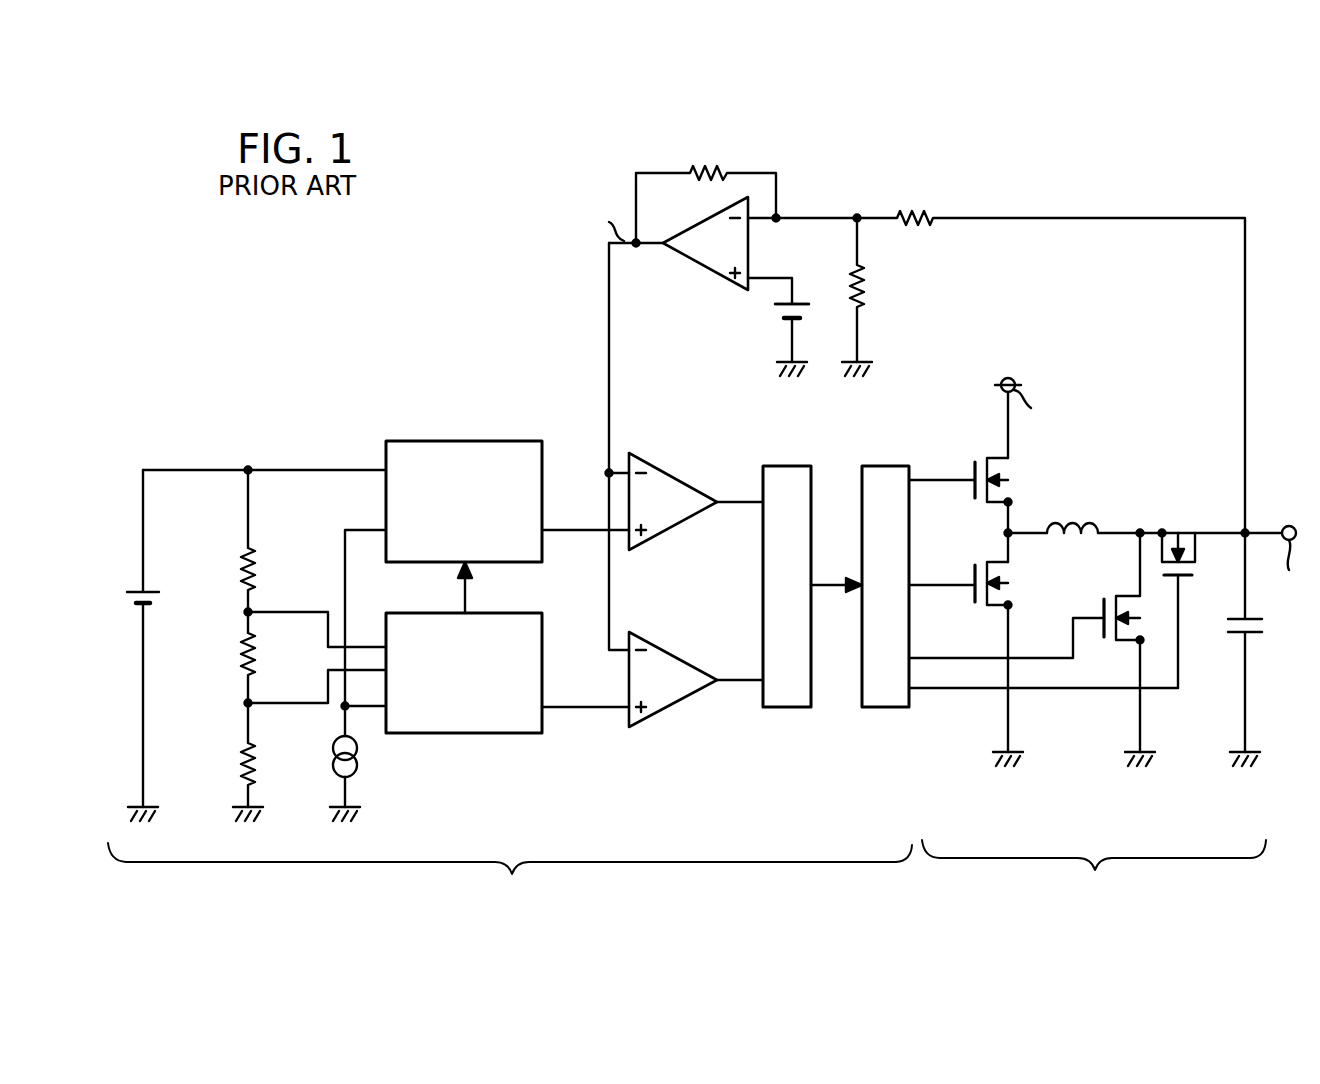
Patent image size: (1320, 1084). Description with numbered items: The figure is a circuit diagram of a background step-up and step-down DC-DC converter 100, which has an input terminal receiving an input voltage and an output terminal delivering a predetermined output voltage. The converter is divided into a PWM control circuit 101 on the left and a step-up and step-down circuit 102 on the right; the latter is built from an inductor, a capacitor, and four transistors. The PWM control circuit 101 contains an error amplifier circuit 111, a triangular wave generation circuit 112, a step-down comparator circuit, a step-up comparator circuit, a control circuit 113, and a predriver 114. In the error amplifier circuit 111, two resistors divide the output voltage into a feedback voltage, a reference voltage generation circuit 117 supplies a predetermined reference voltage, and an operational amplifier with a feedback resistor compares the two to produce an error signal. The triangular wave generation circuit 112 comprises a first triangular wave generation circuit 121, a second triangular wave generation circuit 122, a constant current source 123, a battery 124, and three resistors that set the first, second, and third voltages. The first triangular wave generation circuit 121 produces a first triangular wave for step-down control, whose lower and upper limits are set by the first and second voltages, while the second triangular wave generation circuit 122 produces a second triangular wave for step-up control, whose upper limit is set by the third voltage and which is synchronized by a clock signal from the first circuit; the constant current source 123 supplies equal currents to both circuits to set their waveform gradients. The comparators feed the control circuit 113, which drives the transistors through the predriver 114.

The step-up and step-down DC-DC converter 100 is at (1072, 180).
The PWM control circuit 101 is at (510, 874).
The step-up and step-down circuit 102 is at (1094, 872).
The error amplifier circuit 111 is at (793, 181).
The triangular wave generation circuit 112 is at (364, 406).
The control circuit 113 is at (787, 707).
The predriver 114 is at (886, 707).
The reference voltage generation circuit 117 is at (774, 316).
The first triangular wave generation circuit 121 is at (465, 733).
The second triangular wave generation circuit 122 is at (466, 440).
The constant current source 123 is at (333, 748).
The battery 124 is at (128, 604).